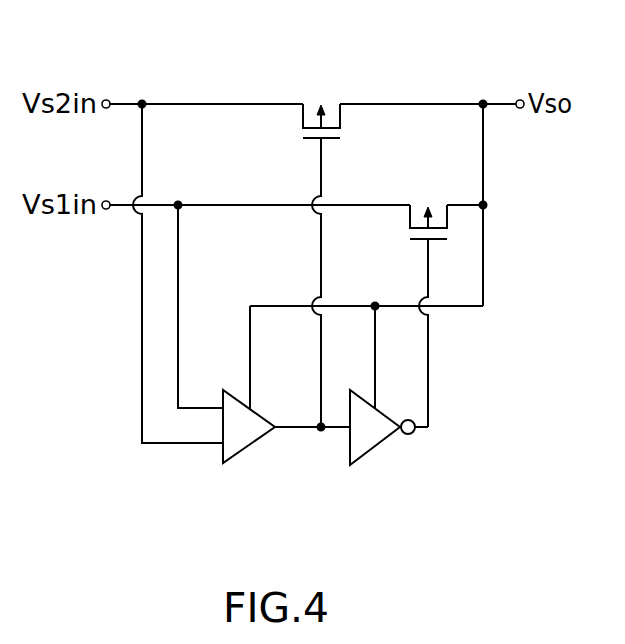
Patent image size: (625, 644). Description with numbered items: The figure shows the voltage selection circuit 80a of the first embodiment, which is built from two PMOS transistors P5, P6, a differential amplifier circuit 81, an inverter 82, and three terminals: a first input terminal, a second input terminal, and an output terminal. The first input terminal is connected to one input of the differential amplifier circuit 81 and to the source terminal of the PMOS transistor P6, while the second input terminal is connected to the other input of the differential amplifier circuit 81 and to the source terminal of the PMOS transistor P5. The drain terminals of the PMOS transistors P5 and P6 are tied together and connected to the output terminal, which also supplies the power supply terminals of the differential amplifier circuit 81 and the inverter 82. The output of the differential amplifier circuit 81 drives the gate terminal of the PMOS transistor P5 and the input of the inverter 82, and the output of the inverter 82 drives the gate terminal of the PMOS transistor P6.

The voltage selection circuit 80a is at (414, 49).
The PMOS transistor P5 is at (325, 105).
The PMOS transistor P6 is at (428, 203).
The differential amplifier circuit 81 is at (253, 443).
The inverter 82 is at (368, 452).